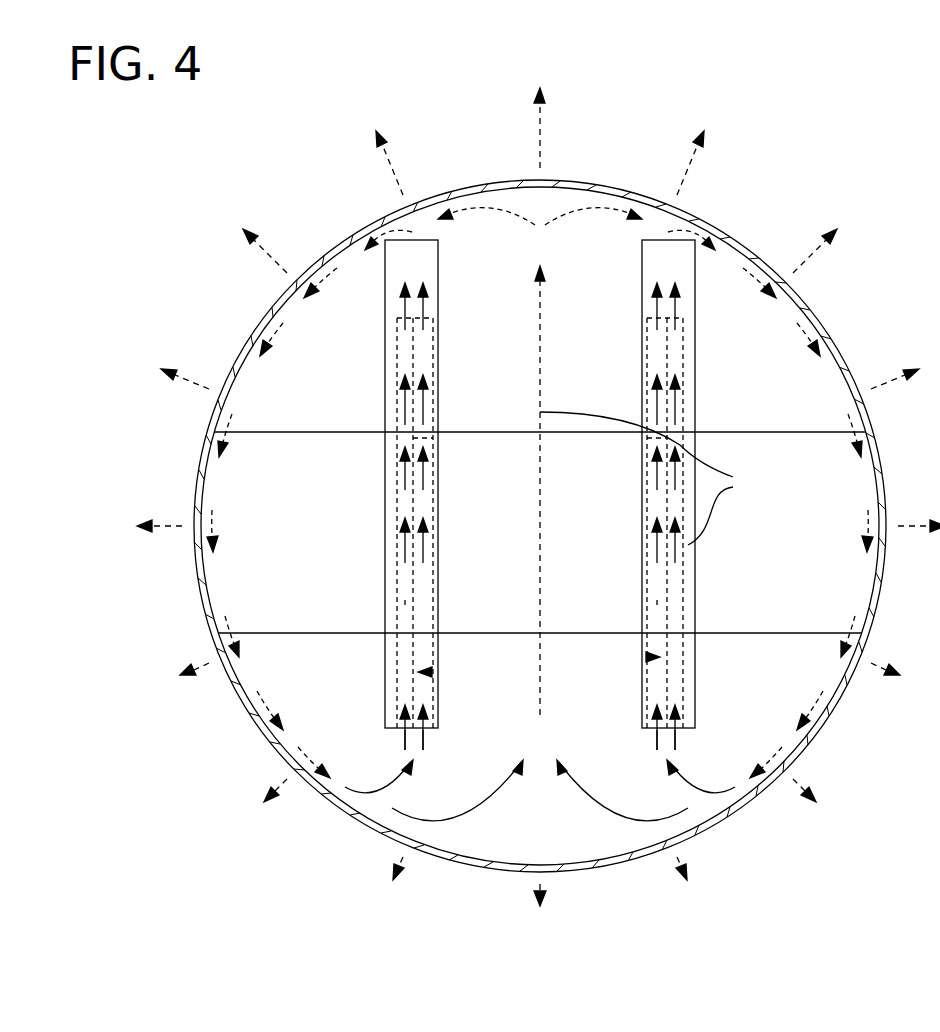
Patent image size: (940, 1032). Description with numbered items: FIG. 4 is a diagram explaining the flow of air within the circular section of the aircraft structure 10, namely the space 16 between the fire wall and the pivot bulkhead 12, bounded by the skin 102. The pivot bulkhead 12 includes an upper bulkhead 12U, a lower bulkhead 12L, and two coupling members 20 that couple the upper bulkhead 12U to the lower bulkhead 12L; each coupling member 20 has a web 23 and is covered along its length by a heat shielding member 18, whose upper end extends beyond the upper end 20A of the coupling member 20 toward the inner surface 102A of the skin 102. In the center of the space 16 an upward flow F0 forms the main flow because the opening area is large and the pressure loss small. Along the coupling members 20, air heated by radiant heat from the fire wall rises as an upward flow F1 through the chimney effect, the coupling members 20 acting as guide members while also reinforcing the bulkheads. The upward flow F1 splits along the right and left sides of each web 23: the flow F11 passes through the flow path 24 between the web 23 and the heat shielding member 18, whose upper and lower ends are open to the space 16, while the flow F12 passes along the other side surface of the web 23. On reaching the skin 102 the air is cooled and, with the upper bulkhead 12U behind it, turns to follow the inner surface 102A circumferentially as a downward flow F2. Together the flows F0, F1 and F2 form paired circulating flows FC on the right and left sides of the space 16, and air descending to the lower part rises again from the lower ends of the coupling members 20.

The air conditioning unit 10 is at (745, 192).
The pivot bulkhead 12 is at (482, 186).
The upper bulkhead 12U is at (312, 416).
The lower bulkhead 12L is at (293, 645).
The space 16 is at (560, 750).
The heat shielding member 18 is at (432, 285).
The coupling member 20 is at (427, 362).
The upper end of the coupling member 20A is at (396, 308).
The web 23 is at (437, 440).
The flow path 24 is at (432, 672).
The skin 102 is at (618, 186).
The inner surface of the skin 102A is at (550, 190).
The upward flow F0 is at (557, 490).
The upward flow F1 is at (543, 587).
The downward flow F2 is at (540, 523).
The upward flow F11 is at (540, 751).
The upward flow F12 is at (540, 767).
The circulating flow FC is at (655, 478).